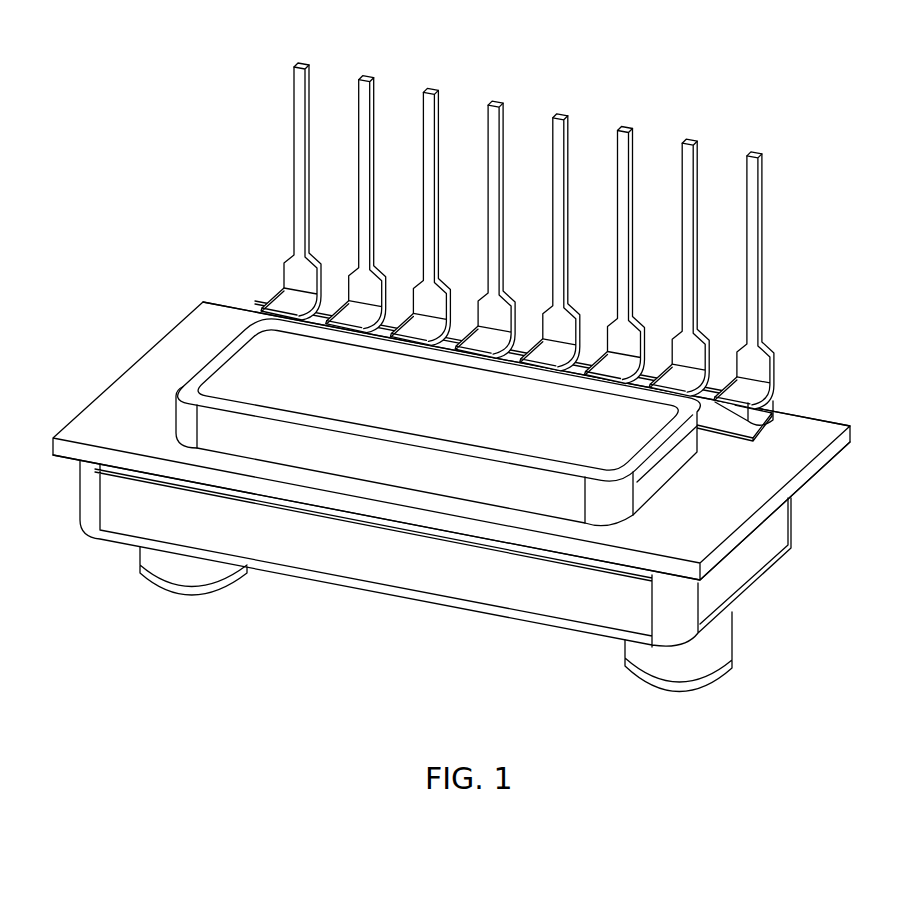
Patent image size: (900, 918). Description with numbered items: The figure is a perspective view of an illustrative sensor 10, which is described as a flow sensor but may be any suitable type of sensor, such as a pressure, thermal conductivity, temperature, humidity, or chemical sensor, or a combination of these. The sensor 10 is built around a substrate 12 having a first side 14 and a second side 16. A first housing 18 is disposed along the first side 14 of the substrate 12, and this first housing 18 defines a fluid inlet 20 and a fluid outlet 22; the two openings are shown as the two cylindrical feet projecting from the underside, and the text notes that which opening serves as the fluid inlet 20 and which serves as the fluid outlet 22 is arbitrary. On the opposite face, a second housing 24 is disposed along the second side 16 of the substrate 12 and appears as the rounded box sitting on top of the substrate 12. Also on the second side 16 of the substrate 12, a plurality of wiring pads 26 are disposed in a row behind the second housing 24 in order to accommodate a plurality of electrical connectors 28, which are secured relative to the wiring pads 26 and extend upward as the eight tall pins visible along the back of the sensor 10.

The sensor 10 is at (476, 377).
The substrate 12 is at (808, 475).
The first side 14 is at (800, 493).
The second side 16 is at (800, 457).
The first housing 18 is at (388, 563).
The fluid inlet 20 is at (152, 560).
The fluid outlet 22 is at (717, 647).
The second housing 24 is at (237, 360).
The wiring pads 26 is at (760, 426).
The electrical connectors 28 is at (755, 205).